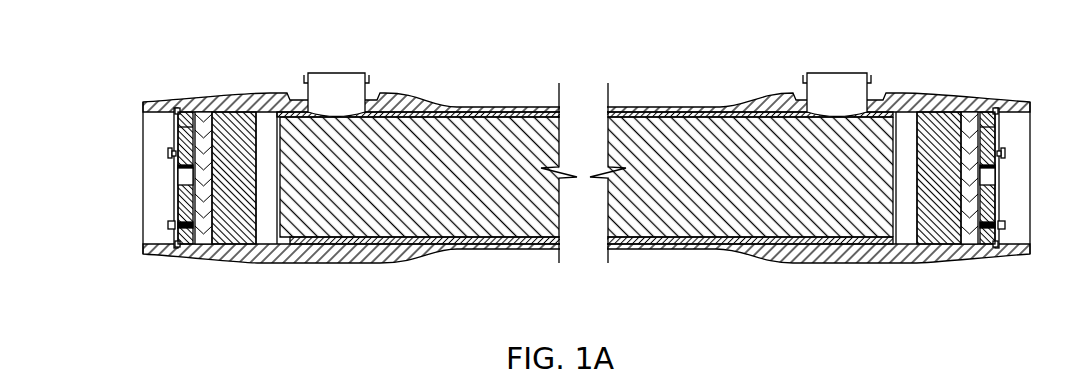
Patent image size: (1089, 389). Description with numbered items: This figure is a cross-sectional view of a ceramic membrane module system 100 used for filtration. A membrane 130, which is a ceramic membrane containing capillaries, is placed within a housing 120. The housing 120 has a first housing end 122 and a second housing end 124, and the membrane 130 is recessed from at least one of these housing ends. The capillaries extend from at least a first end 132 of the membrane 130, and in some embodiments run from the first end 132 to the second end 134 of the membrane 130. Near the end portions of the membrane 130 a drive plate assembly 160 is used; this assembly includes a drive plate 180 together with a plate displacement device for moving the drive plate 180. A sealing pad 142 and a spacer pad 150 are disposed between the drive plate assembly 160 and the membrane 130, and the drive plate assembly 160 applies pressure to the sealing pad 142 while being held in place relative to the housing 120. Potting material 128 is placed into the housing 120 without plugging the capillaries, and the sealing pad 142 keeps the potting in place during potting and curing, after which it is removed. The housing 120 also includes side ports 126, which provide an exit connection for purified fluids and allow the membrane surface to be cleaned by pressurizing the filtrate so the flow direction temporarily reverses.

The ceramic membrane module system 100 is at (582, 164).
The housing 120 is at (630, 108).
The first housing end 122 is at (153, 257).
The second housing end 124 is at (1007, 257).
The side port 126 is at (353, 72).
The potting material 128 is at (282, 123).
The membrane 130 is at (458, 217).
The first end 132 is at (292, 225).
The second end 134 is at (880, 195).
The sealing pad 142 is at (264, 127).
The spacer pad 150 is at (235, 228).
The drive plate assembly 160 is at (189, 84).
The drive plate 180 is at (205, 228).